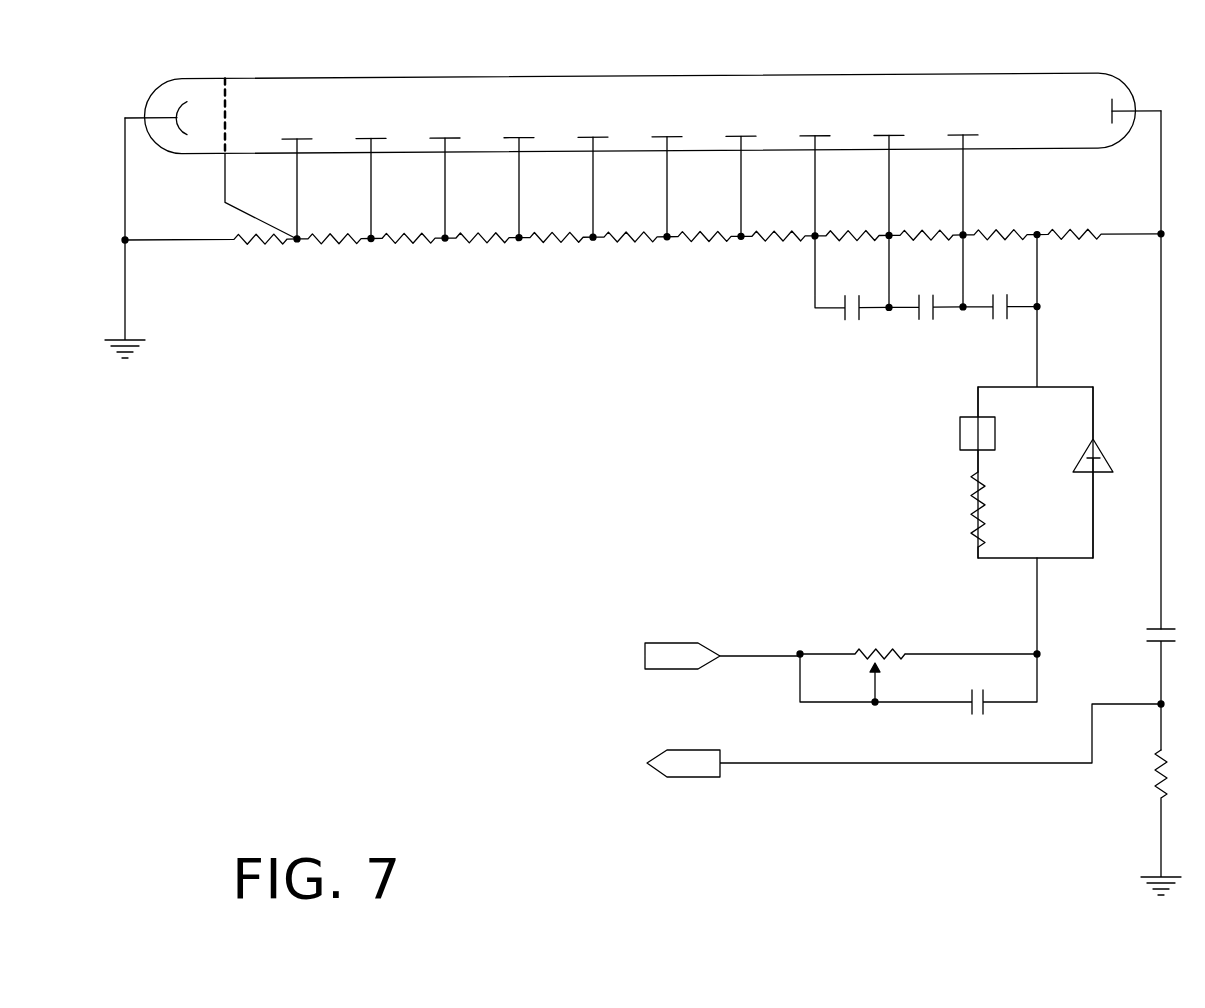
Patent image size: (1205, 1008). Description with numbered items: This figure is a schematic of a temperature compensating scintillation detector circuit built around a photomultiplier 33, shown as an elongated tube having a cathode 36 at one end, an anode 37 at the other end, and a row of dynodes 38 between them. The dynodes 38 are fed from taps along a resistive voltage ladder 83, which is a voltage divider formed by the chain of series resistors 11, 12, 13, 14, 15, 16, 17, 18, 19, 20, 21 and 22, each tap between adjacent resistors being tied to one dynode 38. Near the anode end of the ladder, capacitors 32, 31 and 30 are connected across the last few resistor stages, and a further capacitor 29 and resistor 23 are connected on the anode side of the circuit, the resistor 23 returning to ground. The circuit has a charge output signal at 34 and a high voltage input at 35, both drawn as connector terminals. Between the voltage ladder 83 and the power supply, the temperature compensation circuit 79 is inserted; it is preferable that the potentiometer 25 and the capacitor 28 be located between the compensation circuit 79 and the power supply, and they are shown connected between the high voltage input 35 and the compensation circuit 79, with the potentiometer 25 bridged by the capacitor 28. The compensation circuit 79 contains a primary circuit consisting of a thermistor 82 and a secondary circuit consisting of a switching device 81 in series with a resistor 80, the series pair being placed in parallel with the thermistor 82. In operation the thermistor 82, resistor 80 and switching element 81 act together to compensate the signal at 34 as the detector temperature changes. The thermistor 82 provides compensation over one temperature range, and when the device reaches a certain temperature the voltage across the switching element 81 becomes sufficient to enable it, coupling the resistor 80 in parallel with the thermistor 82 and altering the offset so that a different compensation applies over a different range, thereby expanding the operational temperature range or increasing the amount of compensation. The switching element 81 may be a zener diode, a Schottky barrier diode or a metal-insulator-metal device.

The resistor 11 is at (211, 254).
The resistor 12 is at (334, 254).
The resistor 13 is at (408, 253).
The resistor 14 is at (482, 253).
The resistor 15 is at (556, 252).
The resistor 16 is at (630, 252).
The resistor 17 is at (704, 251).
The resistor 18 is at (778, 251).
The resistor 19 is at (852, 250).
The resistor 20 is at (926, 250).
The resistor 21 is at (1000, 250).
The resistor 22 is at (1099, 249).
The resistor 23 is at (1172, 822).
The potentiometer 25 is at (918, 631).
The capacitor 28 is at (918, 698).
The capacitor 29 is at (1144, 686).
The capacitor 30 is at (1000, 292).
The capacitor 31 is at (924, 292).
The capacitor 32 is at (852, 292).
The photomultiplier 33 is at (640, 113).
The charge output signal 34 is at (648, 763).
The high voltage input 35 is at (645, 655).
The cathode 36 is at (172, 100).
The anode 37 is at (1118, 102).
The dynodes 38 is at (630, 175).
The temperature compensation circuit 79 is at (888, 500).
The resistor 80 is at (957, 515).
The switching device 81 is at (956, 429).
The thermistor 82 is at (1110, 472).
The resistive voltage ladder 83 is at (590, 308).